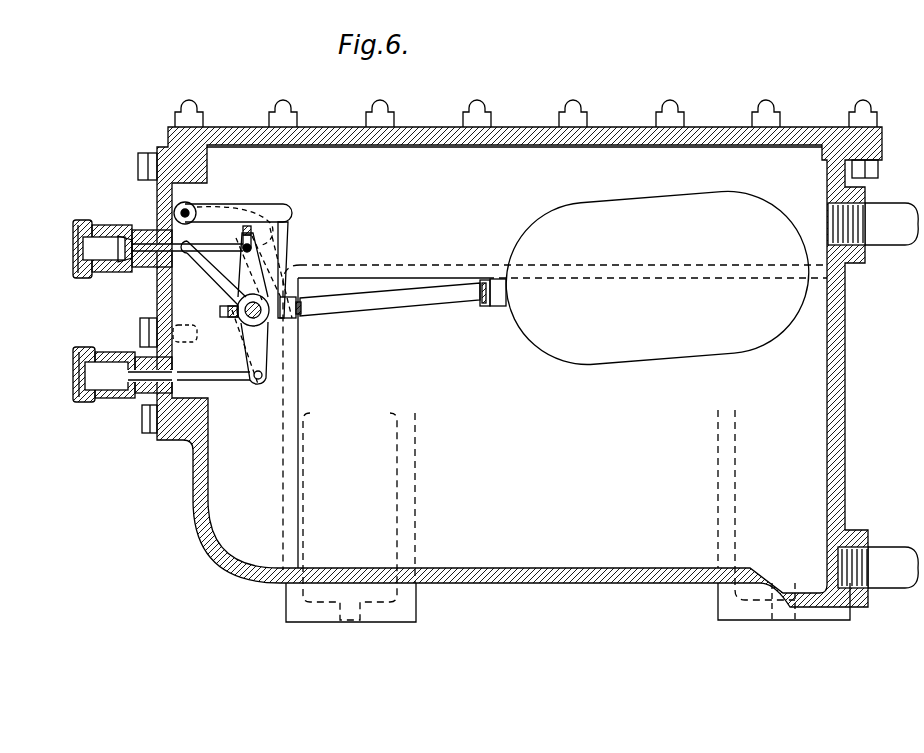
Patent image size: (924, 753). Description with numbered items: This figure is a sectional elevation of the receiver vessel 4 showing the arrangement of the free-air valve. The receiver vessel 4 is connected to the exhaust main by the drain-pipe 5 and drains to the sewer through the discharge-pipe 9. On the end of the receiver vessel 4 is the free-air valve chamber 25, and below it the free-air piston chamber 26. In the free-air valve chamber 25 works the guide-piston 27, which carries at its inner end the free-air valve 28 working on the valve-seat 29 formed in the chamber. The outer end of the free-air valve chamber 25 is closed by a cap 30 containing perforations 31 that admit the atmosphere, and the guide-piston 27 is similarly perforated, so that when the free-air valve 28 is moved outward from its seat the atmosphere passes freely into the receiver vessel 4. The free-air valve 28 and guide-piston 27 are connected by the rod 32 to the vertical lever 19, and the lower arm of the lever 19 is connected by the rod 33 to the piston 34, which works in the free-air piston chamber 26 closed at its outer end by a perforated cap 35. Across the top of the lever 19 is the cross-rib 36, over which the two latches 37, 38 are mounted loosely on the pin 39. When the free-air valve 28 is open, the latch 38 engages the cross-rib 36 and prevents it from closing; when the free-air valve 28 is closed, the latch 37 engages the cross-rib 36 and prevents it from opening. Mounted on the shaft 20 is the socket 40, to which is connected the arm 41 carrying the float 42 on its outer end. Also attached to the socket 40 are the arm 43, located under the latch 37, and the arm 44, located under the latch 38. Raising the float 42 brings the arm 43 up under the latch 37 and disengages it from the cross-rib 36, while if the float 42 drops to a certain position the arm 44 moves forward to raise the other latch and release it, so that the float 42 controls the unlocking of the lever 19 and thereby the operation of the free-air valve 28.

The receiver vessel 4 is at (510, 361).
The drain-pipe 5 is at (891, 224).
The discharge-pipe 9 is at (893, 567).
The vertical lever 19 is at (250, 308).
The shaft 20 is at (248, 316).
The free-air valve chamber 25 is at (110, 225).
The free-air piston chamber 26 is at (110, 350).
The guide-piston 27 is at (104, 248).
The free-air valve 28 is at (130, 268).
The valve-seat 29 is at (138, 232).
The cap 30 is at (88, 276).
The perforations 31 is at (73, 248).
The rod 32 is at (228, 244).
The rod 33 is at (232, 375).
The piston 34 is at (131, 376).
The perforated cap 35 is at (106, 408).
The cross-rib 36 is at (251, 247).
The latch 37 is at (294, 213).
The latch 38 is at (254, 227).
The pin 39 is at (193, 206).
The socket 40 is at (280, 320).
The arm 41 is at (410, 300).
The float 42 is at (657, 277).
The arm 43 is at (285, 256).
The arm 44 is at (210, 270).